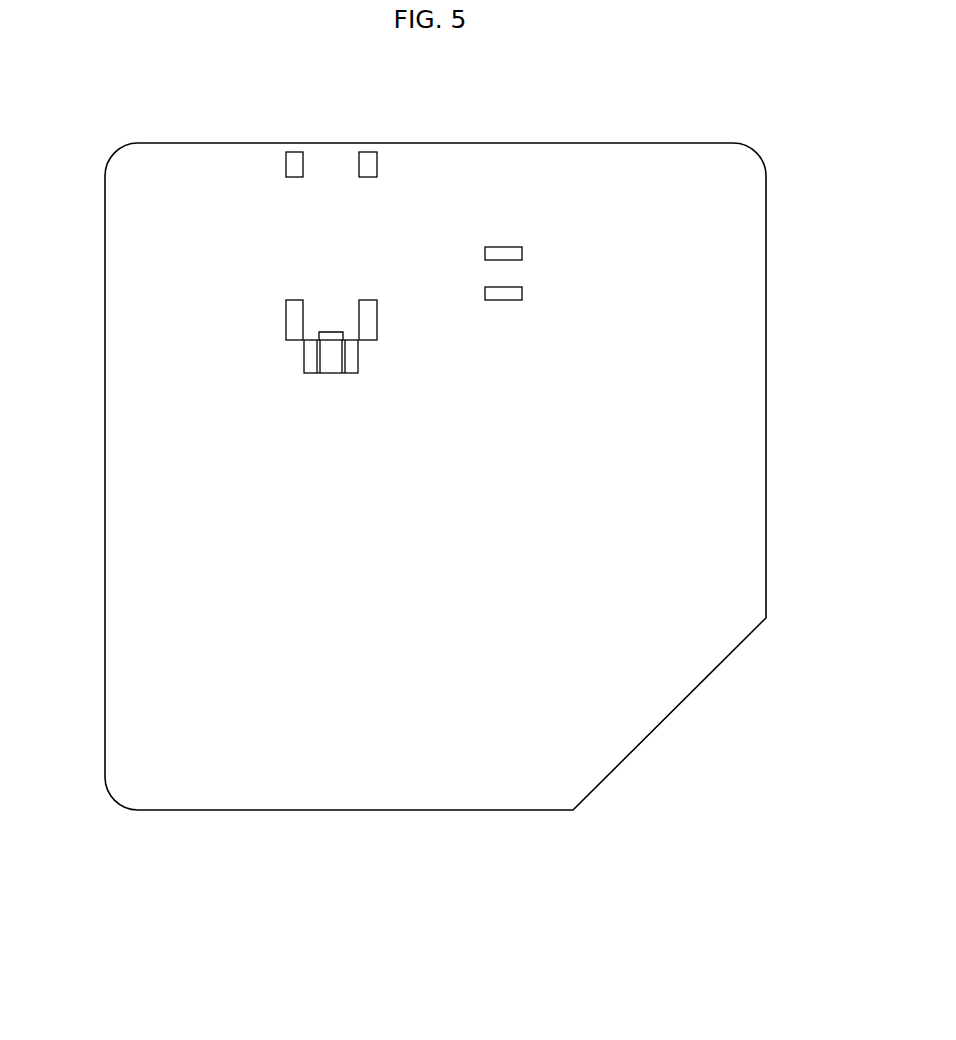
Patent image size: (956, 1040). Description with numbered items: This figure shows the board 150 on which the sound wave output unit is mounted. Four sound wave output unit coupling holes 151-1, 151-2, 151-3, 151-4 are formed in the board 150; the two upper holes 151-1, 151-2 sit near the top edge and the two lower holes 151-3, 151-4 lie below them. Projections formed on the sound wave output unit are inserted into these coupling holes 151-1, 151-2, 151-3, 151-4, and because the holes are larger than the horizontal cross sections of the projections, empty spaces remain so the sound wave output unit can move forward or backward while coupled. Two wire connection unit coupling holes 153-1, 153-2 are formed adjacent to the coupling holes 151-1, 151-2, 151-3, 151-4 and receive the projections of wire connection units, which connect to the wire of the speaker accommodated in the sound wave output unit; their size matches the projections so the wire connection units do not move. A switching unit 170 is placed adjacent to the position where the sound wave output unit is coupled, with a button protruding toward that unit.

The board 150 is at (116, 804).
The sound wave output unit coupling hole 151-1 is at (296, 158).
The sound wave output unit coupling hole 151-2 is at (369, 158).
The sound wave output unit coupling hole 151-3 is at (295, 320).
The sound wave output unit coupling hole 151-4 is at (367, 300).
The wire connection unit coupling hole 153-1 is at (503, 252).
The wire connection unit coupling hole 153-2 is at (512, 293).
The switching unit 170 is at (330, 357).